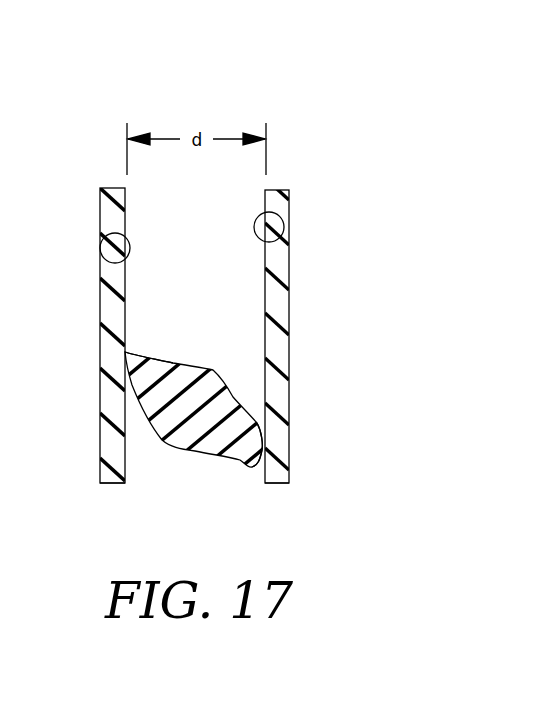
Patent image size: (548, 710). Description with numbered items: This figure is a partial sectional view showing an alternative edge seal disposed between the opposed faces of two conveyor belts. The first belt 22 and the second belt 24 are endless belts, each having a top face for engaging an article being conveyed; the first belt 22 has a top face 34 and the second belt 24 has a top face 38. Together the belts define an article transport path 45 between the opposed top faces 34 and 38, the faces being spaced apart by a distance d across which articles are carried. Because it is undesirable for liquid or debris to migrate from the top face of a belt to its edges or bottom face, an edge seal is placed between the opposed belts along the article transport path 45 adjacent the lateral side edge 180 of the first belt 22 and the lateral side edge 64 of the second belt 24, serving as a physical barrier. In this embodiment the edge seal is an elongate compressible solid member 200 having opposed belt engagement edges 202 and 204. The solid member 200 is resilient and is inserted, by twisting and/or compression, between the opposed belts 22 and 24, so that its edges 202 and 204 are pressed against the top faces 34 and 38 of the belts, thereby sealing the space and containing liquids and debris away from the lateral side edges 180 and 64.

The first belt 22 is at (292, 315).
The second belt 24 is at (100, 291).
The top face 34 is at (290, 213).
The top face 38 is at (100, 236).
The article transport path 45 is at (178, 254).
The lateral side edge 64 is at (108, 485).
The lateral side edge 180 is at (275, 485).
The elongate compressible solid member 200 is at (207, 440).
The belt engagement edge 202 is at (268, 460).
The belt engagement edge 204 is at (125, 352).